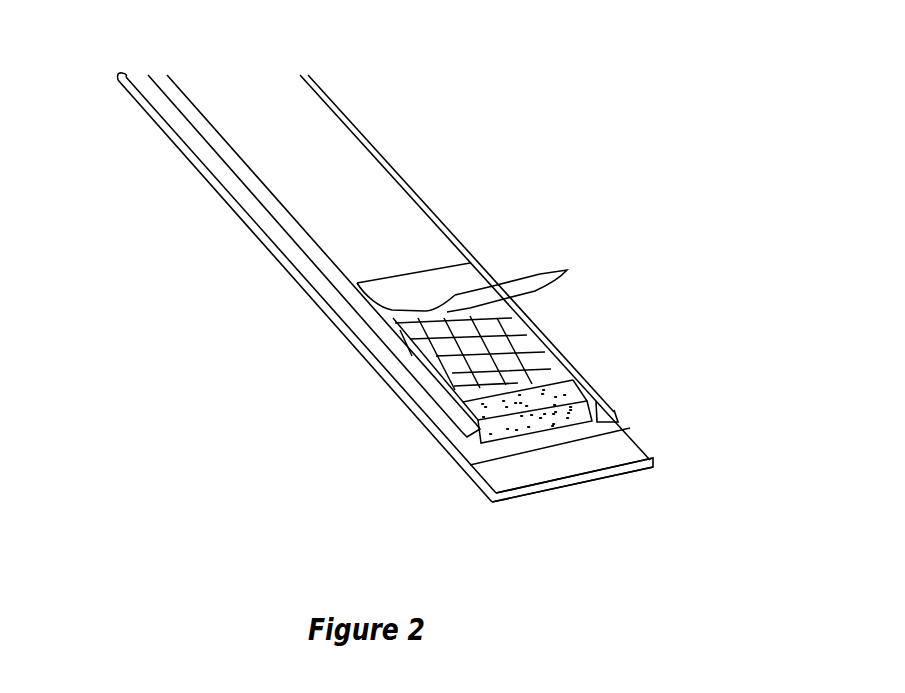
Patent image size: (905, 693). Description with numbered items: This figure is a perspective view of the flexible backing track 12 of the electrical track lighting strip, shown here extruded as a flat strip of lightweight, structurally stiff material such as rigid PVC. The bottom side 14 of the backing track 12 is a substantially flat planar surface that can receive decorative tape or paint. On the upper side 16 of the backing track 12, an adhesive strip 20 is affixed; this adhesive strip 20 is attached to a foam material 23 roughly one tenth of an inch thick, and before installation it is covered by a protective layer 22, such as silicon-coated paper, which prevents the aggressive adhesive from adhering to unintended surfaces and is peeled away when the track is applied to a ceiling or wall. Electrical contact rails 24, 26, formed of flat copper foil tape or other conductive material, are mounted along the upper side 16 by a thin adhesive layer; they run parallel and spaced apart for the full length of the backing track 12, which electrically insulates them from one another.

The flexible backing track 12 is at (472, 482).
The bottom side 14 is at (600, 488).
The upper side 16 is at (588, 452).
The adhesive strip 20 is at (517, 338).
The protective layer 22 is at (470, 263).
The foam material 23 is at (574, 396).
The electrical contact rail 24 is at (358, 339).
The electrical contact rail 26 is at (617, 413).